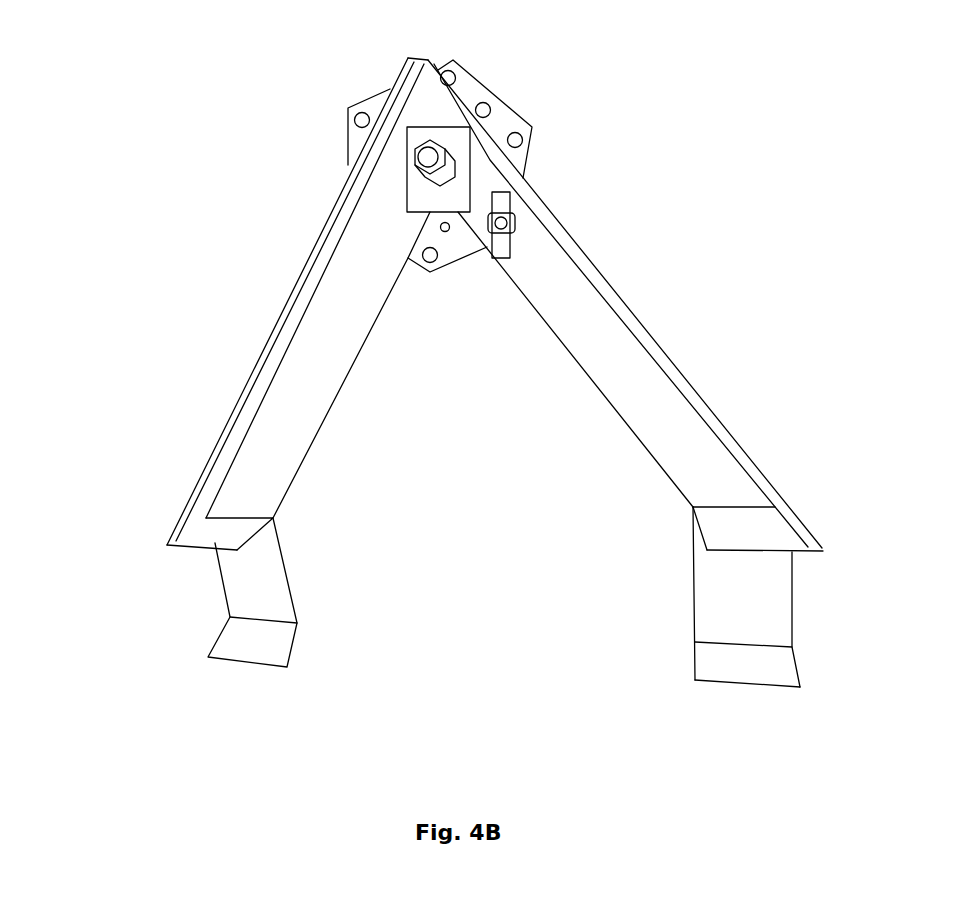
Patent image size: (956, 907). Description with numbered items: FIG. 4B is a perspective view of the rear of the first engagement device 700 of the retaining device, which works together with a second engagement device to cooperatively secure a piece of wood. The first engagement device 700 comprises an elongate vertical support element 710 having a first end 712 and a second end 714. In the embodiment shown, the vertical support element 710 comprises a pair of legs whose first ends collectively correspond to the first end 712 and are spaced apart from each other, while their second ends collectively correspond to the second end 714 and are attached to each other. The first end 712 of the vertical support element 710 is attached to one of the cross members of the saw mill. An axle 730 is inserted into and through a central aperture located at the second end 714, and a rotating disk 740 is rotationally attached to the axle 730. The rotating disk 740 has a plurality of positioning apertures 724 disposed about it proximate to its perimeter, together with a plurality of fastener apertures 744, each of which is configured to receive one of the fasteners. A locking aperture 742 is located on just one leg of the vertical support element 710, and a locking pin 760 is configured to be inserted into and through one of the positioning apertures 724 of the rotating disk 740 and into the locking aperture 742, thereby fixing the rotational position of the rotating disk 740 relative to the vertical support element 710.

The first engagement device 700 is at (203, 294).
The elongate vertical support element 710 is at (603, 332).
The first end 712 is at (248, 591).
The second end 714 is at (435, 108).
The positioning apertures 724 is at (352, 120).
The axle 730 is at (415, 158).
The rotating disk 740 is at (507, 122).
The locking aperture 742 is at (517, 232).
The fastener apertures 744 is at (447, 232).
The locking pin 760 is at (518, 225).